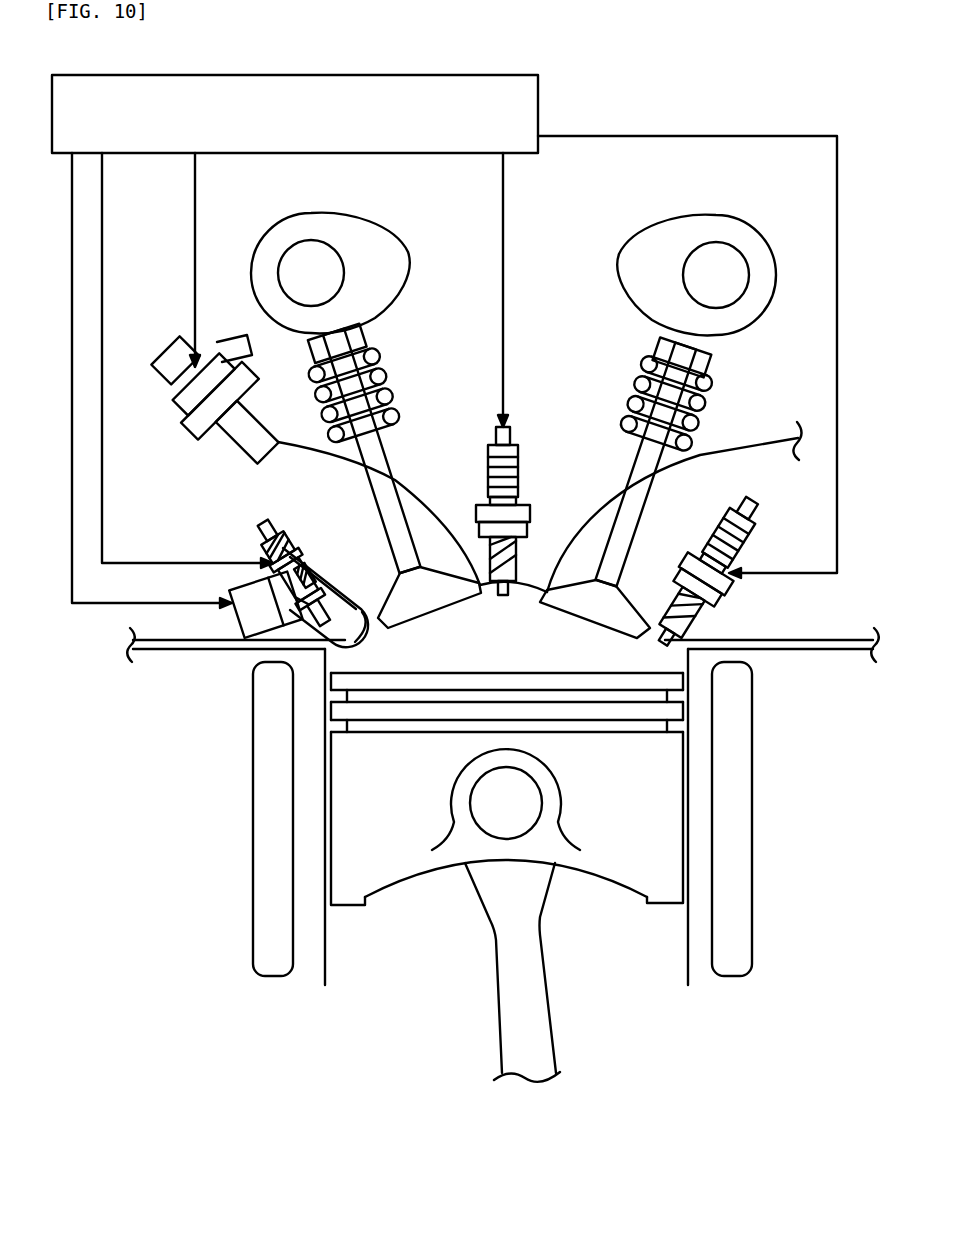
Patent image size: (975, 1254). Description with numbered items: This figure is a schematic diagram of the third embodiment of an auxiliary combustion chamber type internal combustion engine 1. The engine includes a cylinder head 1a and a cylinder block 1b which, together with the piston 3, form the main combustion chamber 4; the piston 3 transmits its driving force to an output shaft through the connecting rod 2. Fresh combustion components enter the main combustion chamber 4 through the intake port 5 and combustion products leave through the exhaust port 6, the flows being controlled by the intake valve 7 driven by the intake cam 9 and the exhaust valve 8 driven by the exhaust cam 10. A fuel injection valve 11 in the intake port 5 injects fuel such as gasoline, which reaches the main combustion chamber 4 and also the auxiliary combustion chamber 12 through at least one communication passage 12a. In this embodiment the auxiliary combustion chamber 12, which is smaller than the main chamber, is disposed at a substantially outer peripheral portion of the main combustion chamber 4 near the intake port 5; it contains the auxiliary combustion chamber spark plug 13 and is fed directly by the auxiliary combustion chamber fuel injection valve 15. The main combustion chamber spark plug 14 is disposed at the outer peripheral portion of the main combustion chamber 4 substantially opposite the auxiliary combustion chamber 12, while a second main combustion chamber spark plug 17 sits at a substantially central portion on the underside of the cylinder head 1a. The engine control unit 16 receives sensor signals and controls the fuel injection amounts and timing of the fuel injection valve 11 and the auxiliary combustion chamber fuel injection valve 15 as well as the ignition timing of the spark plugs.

The internal combustion engine 1 is at (503, 817).
The cylinder head 1a is at (503, 629).
The cylinder block 1b is at (559, 817).
The connecting rod 2 is at (514, 1020).
The piston 3 is at (620, 866).
The main combustion chamber 4 is at (568, 655).
The intake port 5 is at (254, 560).
The exhaust port 6 is at (720, 571).
The intake valve 7 is at (403, 600).
The exhaust valve 8 is at (617, 603).
The intake cam 9 is at (354, 228).
The exhaust cam 10 is at (684, 240).
The fuel injection valve 11 is at (165, 364).
The auxiliary combustion chamber 12 is at (365, 645).
The communication passage 12a is at (372, 635).
The auxiliary combustion chamber spark plug 13 is at (262, 527).
The main combustion chamber spark plug 14 is at (717, 553).
The auxiliary combustion chamber fuel injection valve 15 is at (260, 628).
The engine control unit 16 is at (538, 92).
The second main combustion chamber spark plug 17 is at (512, 525).